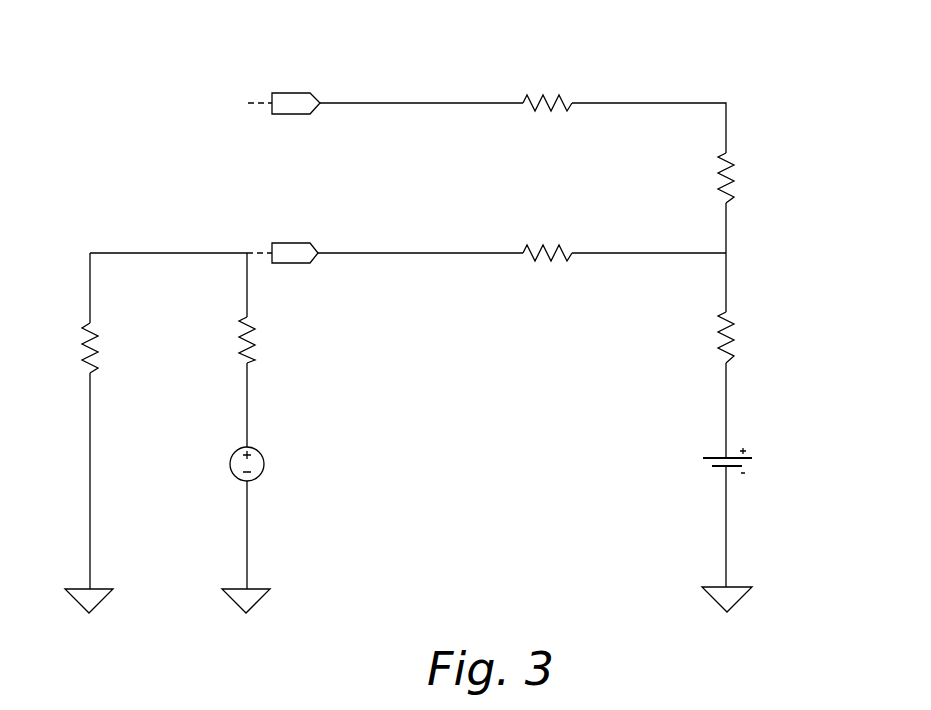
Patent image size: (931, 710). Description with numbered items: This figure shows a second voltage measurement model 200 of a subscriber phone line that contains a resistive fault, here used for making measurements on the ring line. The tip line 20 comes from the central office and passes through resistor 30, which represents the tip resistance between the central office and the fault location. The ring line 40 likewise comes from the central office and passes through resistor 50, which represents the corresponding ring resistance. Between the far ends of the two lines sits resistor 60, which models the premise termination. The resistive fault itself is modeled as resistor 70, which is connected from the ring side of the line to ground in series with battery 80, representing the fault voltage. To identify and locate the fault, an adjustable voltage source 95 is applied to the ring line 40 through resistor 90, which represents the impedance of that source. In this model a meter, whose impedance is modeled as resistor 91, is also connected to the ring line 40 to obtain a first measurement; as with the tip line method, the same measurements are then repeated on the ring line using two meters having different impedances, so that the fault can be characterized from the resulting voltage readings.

The circuit 200 is at (150, 79).
The tip line 20 is at (283, 92).
The resistor 30 is at (547, 80).
The ring line 40 is at (295, 228).
The resistor 50 is at (558, 228).
The resistor 60 is at (738, 177).
The resistor 70 is at (738, 330).
The battery 80 is at (762, 462).
The resistor 90 is at (270, 352).
The resistor 91 is at (113, 362).
The adjustable voltage source 95 is at (268, 464).